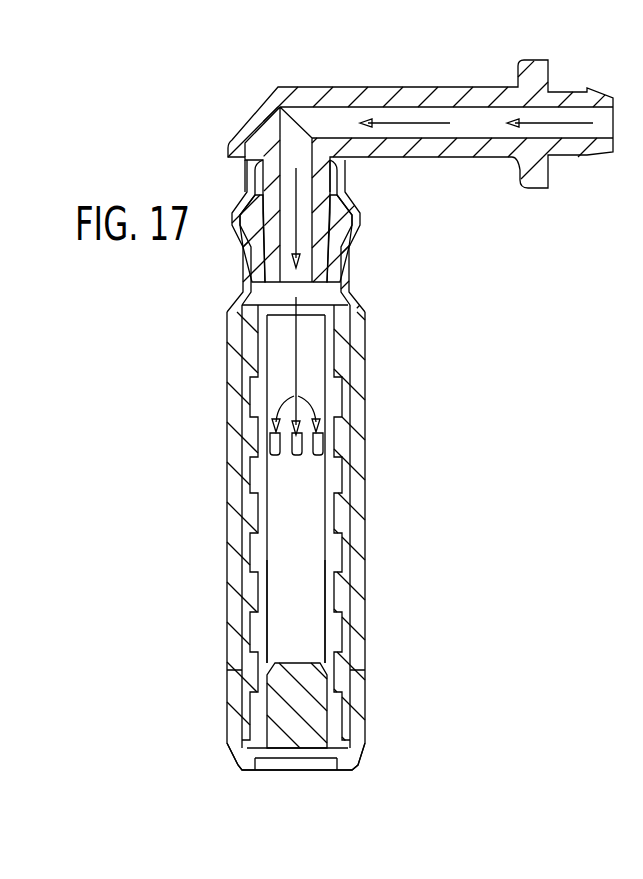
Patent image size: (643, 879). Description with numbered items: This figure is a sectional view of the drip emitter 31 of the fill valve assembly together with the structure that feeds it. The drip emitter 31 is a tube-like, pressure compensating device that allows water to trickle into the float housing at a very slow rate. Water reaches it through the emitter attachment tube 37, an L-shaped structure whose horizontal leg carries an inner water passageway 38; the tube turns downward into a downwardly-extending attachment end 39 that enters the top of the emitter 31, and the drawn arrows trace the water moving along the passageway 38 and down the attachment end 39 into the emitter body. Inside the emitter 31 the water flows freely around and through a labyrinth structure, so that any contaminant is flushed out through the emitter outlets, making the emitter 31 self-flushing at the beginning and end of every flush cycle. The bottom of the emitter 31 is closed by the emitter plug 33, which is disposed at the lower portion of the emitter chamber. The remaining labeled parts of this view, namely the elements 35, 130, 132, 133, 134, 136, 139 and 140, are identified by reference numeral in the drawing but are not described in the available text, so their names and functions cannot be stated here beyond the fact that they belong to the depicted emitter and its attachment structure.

The drip emitter 31 is at (357, 343).
The emitter plug 33 is at (300, 737).
The base 35 is at (237, 660).
The emitter attachment tube 37 is at (380, 87).
The inner water passageway 38 is at (463, 128).
The downwardly-extending attachment end 39 is at (320, 232).
The liner 130 is at (333, 460).
The chamber 132 is at (300, 525).
The outlet openings 133 is at (298, 447).
The interior space 134 is at (285, 360).
The lower chamber 136 is at (298, 600).
The crimp cap 139 is at (245, 247).
The liner wall 140 is at (255, 512).